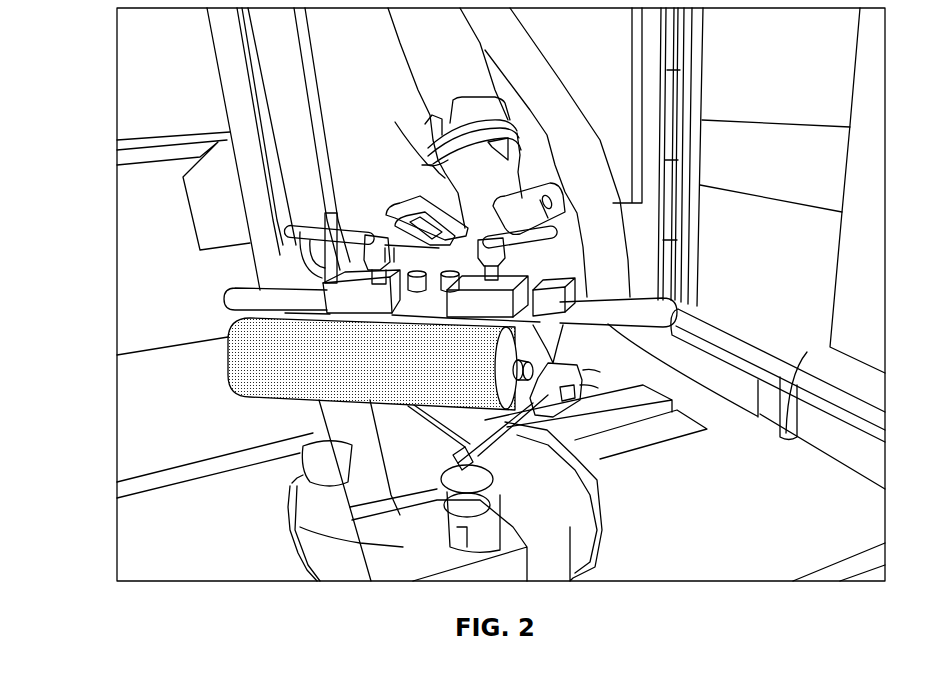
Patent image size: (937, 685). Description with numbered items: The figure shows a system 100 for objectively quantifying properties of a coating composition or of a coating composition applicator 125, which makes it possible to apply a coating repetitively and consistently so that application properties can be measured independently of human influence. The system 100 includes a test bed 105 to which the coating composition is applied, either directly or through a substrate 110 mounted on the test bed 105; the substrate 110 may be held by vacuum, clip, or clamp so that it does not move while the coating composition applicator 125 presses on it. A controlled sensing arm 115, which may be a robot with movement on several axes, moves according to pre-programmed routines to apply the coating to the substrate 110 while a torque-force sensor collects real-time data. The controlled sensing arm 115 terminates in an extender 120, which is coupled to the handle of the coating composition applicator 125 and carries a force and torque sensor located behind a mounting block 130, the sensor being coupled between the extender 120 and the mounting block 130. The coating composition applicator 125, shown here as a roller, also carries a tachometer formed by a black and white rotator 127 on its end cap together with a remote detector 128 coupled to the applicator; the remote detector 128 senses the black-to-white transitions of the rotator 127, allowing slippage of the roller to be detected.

The system 100 is at (88, 86).
The test bed 105 is at (738, 343).
The substrate 110 is at (788, 430).
The controlled sensing arm 115 is at (286, 86).
The extender 120 is at (432, 148).
The coating composition applicator 125 is at (390, 373).
The rotator 127 is at (547, 356).
The remote detector 128 is at (557, 397).
The mounting block 130 is at (390, 207).